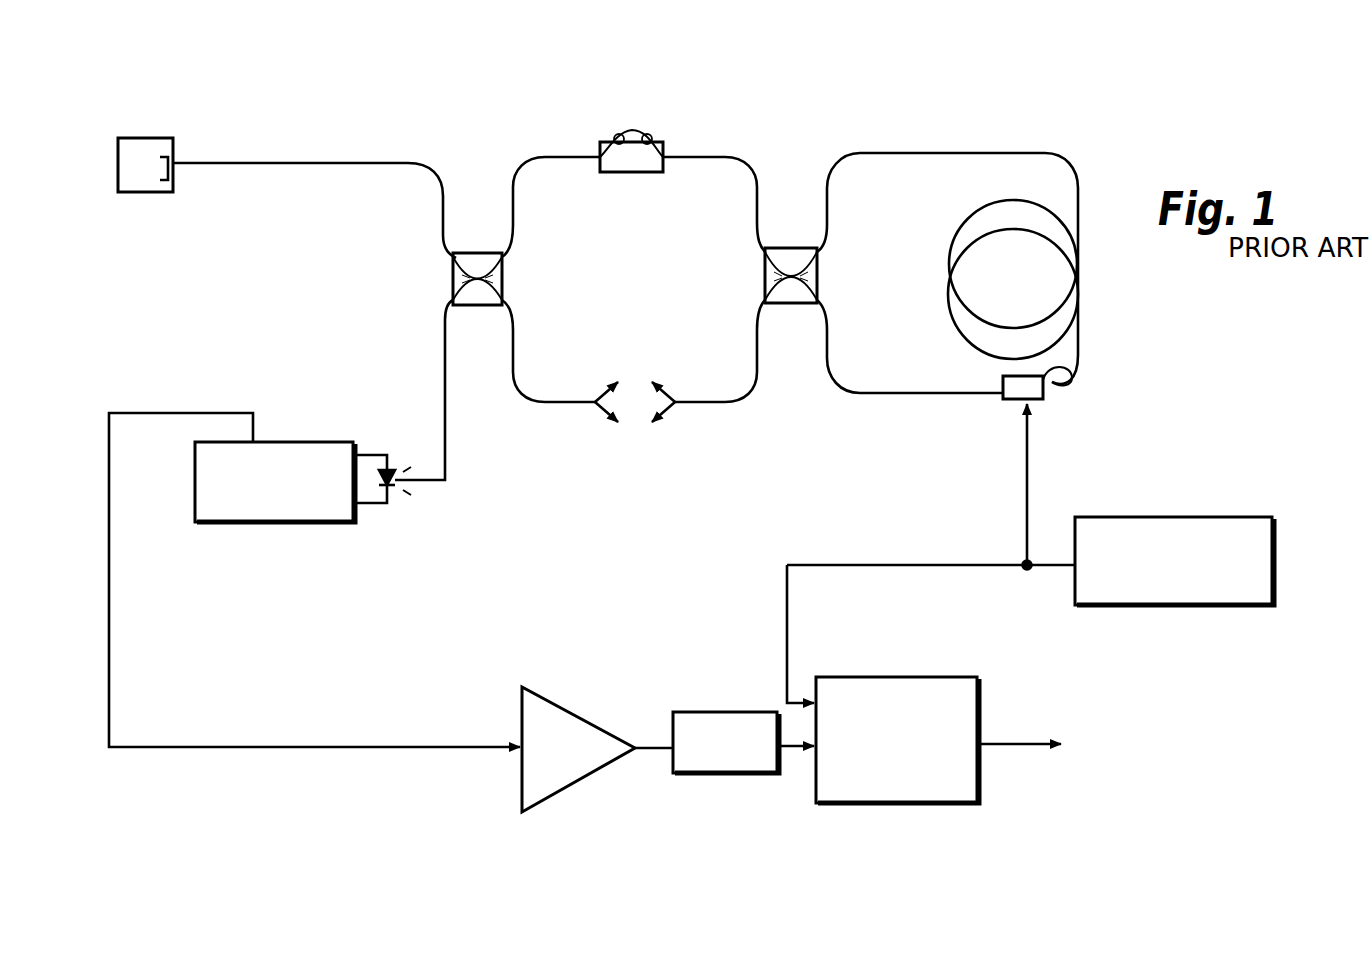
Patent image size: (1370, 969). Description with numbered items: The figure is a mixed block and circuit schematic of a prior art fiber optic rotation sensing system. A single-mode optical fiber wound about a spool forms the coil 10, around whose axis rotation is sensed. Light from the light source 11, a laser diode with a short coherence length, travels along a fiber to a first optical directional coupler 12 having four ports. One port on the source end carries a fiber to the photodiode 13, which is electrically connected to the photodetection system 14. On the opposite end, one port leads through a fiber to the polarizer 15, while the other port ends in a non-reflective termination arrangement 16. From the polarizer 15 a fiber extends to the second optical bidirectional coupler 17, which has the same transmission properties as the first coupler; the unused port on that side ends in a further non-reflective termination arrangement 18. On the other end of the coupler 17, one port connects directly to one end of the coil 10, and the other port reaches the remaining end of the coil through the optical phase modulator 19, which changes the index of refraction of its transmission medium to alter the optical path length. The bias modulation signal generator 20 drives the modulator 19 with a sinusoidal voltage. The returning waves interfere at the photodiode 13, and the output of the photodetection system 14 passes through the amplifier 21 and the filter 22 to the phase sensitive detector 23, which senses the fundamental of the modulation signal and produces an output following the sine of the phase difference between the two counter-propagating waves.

The coil 10 is at (958, 230).
The light source 11 is at (143, 138).
The first optical directional coupler 12 is at (475, 252).
The photodiode 13 is at (390, 470).
The photodetection system 14 is at (330, 442).
The polarizer 15 is at (610, 140).
The non-reflective termination arrangement 16 is at (607, 394).
The optical bidirectional coupler 17 is at (784, 248).
The non-reflective termination arrangement 18 is at (666, 394).
The optical phase modulator 19 is at (1043, 391).
The bias modulation signal generator 20 is at (1247, 517).
The amplifier 21 is at (580, 715).
The filter 22 is at (733, 712).
The phase sensitive detector 23 is at (908, 677).